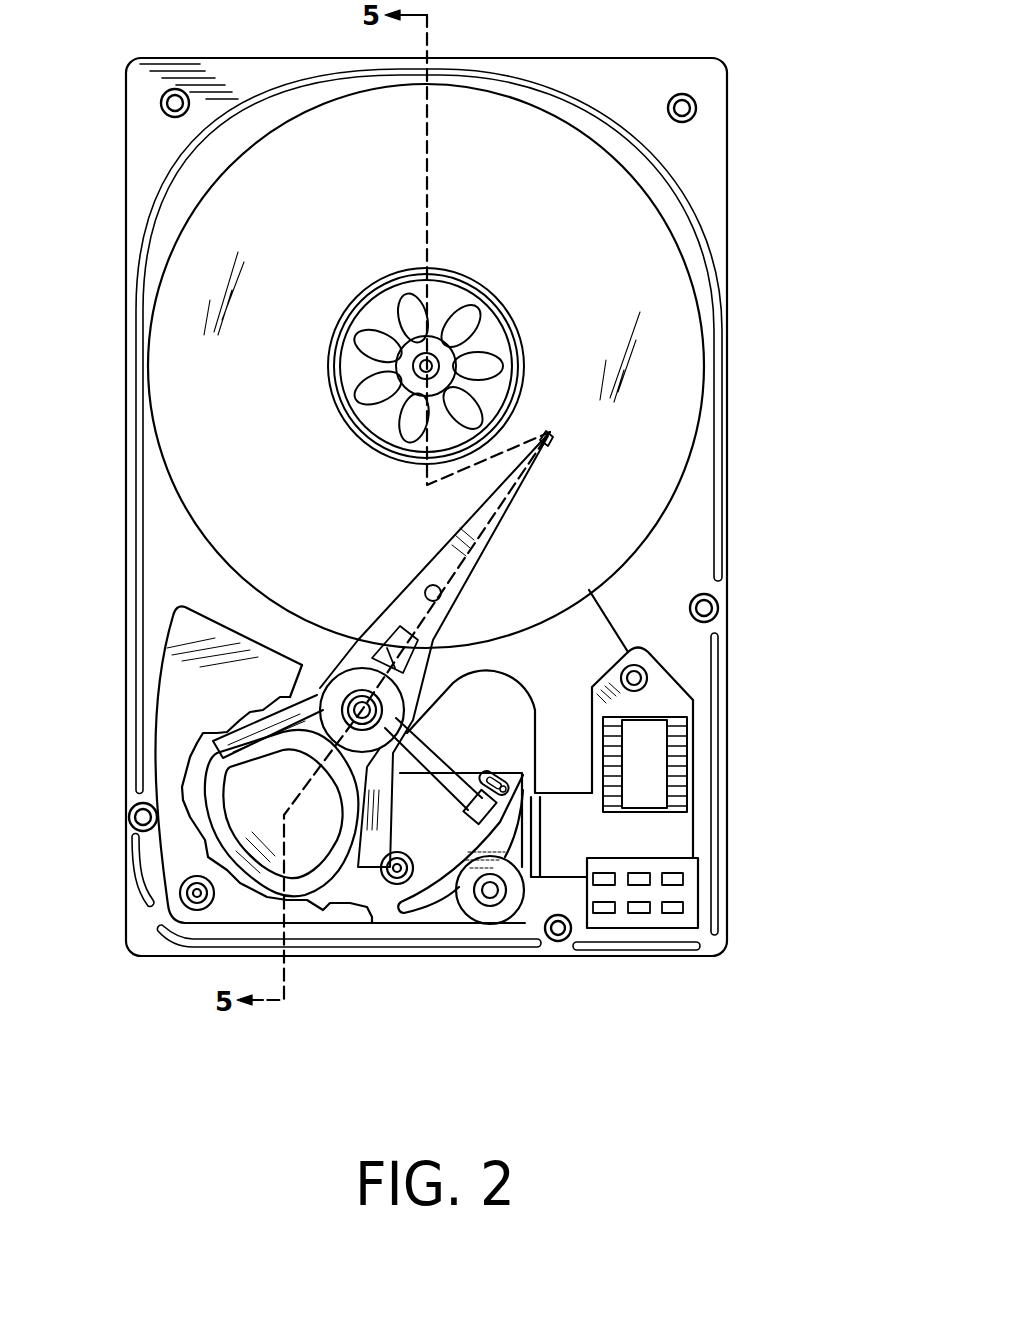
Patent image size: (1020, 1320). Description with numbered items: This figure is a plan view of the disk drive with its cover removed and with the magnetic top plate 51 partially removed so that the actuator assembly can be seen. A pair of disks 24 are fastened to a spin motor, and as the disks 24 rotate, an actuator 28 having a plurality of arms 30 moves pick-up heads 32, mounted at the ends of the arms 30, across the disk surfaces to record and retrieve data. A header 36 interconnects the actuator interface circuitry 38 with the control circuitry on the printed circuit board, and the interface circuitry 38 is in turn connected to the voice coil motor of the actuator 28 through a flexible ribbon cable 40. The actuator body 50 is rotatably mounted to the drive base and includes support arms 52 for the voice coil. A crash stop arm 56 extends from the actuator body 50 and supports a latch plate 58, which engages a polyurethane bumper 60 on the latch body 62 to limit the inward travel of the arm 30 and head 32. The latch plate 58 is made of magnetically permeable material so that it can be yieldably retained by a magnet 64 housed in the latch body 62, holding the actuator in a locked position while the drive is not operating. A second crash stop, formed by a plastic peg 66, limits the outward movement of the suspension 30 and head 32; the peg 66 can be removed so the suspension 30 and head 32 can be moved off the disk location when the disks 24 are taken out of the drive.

The disks 24 is at (612, 260).
The actuator 28 is at (385, 649).
The arms 30 is at (472, 530).
The pick-up heads 32 is at (547, 452).
The header 36 is at (645, 920).
The actuator interface circuitry 38 is at (657, 770).
The flexible ribbon cable 40 is at (505, 668).
The actuator body 50 is at (355, 685).
The magnetic top plate 51 is at (213, 694).
The support arms 52 is at (242, 755).
The crash stop arm 56 is at (433, 750).
The latch plate 58 is at (477, 770).
The polyurethane bumper 60 is at (488, 767).
The latch body 62 is at (427, 897).
The magnet 64 is at (508, 772).
The plastic peg 66 is at (397, 878).